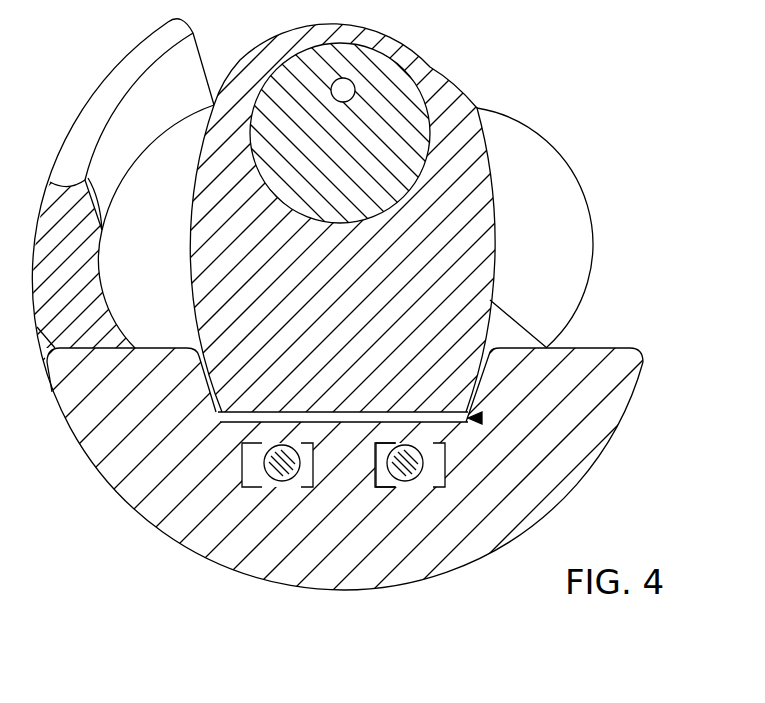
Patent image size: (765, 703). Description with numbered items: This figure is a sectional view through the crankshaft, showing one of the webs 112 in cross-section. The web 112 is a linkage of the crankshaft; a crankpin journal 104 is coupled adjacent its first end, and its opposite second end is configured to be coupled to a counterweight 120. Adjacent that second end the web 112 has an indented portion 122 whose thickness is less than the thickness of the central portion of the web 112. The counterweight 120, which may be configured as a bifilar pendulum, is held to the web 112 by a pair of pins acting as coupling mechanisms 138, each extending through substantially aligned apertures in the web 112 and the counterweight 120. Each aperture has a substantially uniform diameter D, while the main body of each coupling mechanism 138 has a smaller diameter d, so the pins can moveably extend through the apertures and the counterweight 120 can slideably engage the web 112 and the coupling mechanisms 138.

The crankpin journal 104 is at (401, 76).
The web 112 is at (464, 107).
The counterweight 120 is at (622, 347).
The indented portion 122 is at (473, 418).
The coupling mechanism 138 is at (313, 472).
The diameter of the apertures D is at (242, 466).
The diameter of the main body of the coupling mechanism d is at (375, 462).